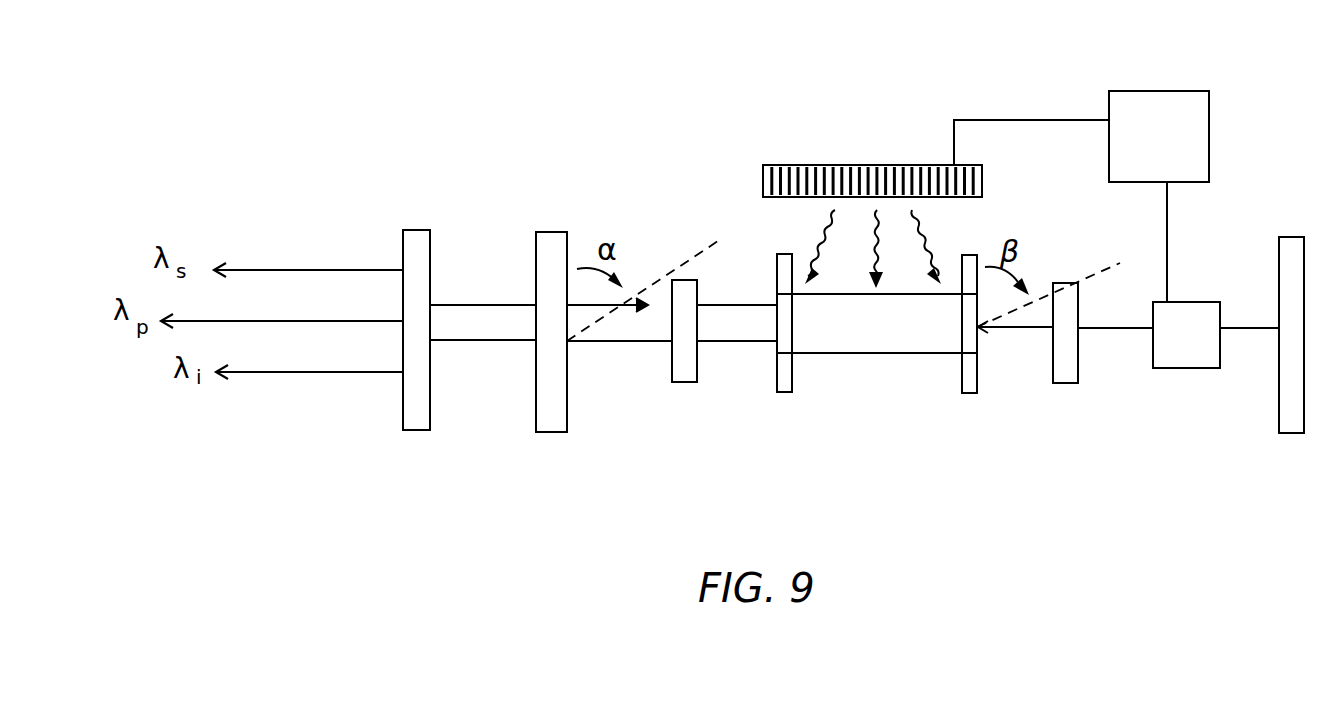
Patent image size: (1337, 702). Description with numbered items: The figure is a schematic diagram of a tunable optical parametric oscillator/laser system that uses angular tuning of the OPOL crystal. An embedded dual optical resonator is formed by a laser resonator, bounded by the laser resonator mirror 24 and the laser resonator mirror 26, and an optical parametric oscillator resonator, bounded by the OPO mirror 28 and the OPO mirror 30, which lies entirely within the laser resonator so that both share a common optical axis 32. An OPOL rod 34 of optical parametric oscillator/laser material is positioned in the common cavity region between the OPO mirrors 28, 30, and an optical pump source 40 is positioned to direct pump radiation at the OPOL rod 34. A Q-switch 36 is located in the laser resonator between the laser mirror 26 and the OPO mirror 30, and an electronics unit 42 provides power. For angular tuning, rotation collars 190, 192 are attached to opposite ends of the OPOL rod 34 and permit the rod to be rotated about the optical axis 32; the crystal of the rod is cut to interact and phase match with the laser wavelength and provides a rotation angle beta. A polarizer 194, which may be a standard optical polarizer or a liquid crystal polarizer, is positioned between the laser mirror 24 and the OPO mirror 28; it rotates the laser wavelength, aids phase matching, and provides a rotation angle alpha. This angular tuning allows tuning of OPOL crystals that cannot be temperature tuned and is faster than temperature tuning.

The laser resonator mirror 24 is at (419, 230).
The laser resonator mirror 26 is at (1294, 237).
The OPO mirror 28 is at (687, 280).
The OPO mirror 30 is at (1064, 283).
The optical axis 32 is at (1118, 331).
The OPOL rod 34 is at (911, 354).
The Q-switch 36 is at (1192, 370).
The optical pump source 40 is at (829, 165).
The electronics unit 42 is at (1163, 91).
The rotation collar 190 is at (775, 381).
The rotation collar 192 is at (960, 376).
The polarizer 194 is at (536, 250).